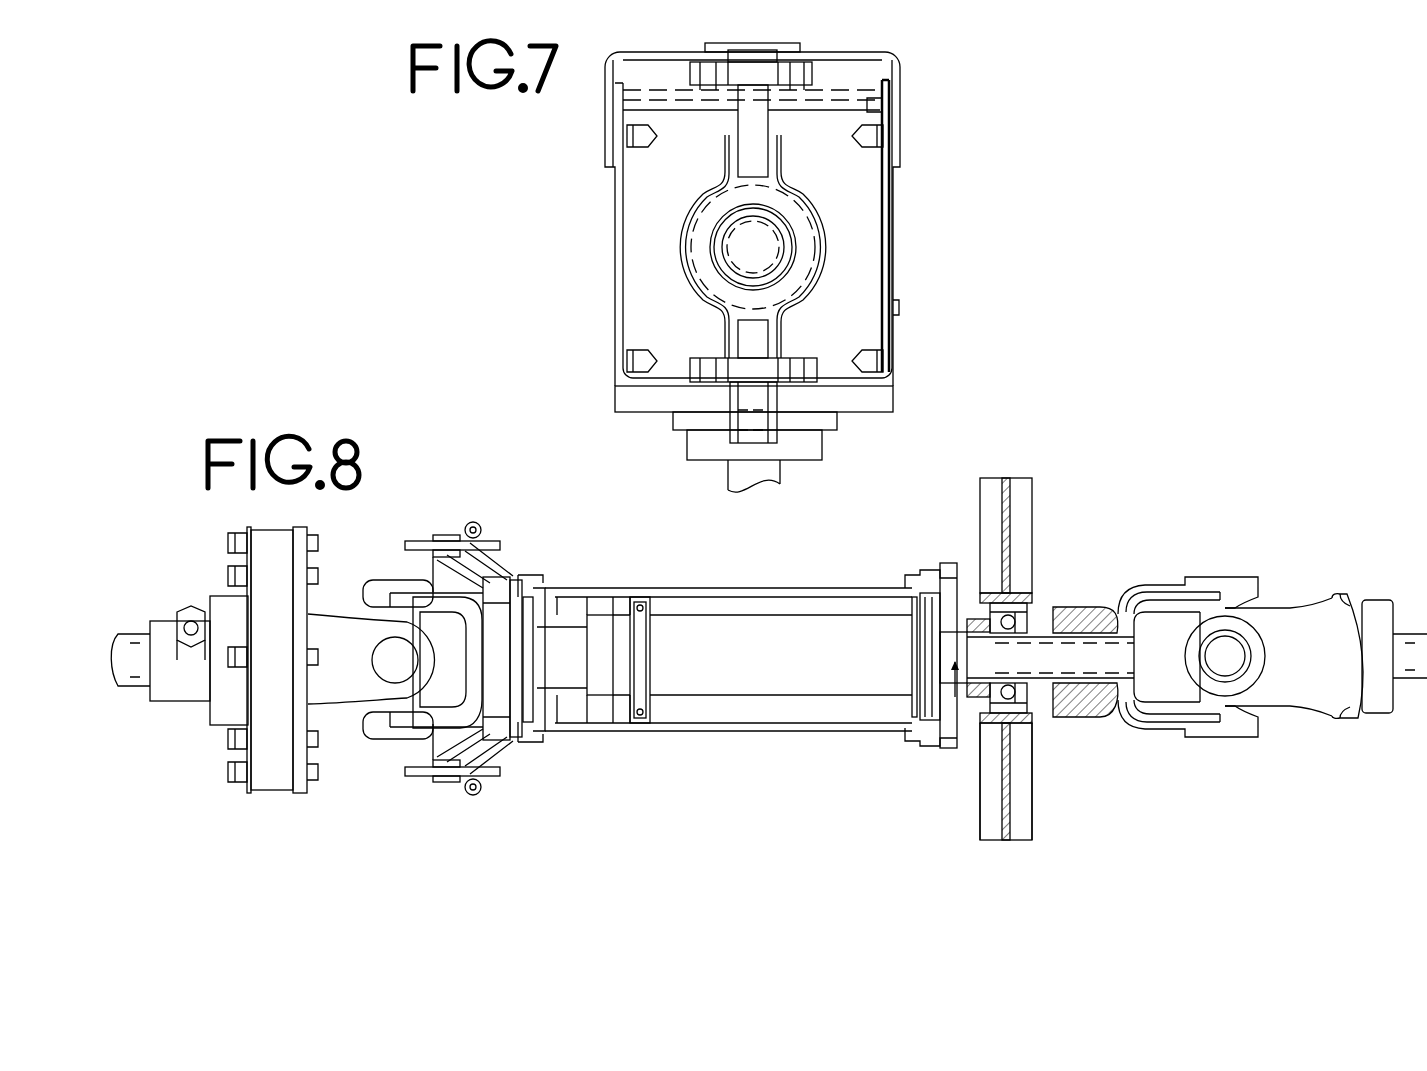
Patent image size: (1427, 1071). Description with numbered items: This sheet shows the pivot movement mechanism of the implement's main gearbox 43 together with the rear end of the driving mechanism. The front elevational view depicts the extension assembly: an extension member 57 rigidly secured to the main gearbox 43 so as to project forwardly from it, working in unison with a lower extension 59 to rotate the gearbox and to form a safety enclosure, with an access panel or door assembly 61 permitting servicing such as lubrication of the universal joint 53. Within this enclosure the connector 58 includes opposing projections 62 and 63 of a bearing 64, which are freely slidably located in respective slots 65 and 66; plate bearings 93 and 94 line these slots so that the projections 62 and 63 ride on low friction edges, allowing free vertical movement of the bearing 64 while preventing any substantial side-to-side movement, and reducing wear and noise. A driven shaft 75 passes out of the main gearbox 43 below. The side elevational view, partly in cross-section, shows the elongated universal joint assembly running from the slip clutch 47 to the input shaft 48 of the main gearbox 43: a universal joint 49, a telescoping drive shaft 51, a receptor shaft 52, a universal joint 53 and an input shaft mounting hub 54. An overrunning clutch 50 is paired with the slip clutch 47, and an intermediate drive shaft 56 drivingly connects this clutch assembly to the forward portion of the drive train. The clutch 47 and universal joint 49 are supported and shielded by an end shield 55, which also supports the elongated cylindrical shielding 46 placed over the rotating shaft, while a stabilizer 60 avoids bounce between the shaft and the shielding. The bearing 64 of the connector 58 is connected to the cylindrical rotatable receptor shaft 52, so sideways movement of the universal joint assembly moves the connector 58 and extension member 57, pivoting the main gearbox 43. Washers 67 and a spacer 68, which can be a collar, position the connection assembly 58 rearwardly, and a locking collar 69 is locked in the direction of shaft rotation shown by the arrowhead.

In FIG. 7, the main gearbox 43 is at (885, 390).
In FIG. 7, the extension member 57 is at (892, 52).
In FIG. 7, the lower extension 59 is at (612, 300).
In FIG. 7, the access panel or door assembly 61 is at (896, 212).
In FIG. 7, the projection 62 is at (736, 116).
In FIG. 8, the projection 62 is at (1018, 508).
In FIG. 7, the projection 63 is at (730, 403).
In FIG. 8, the projection 63 is at (1022, 805).
In FIG. 7, the bearing 64 is at (793, 212).
In FIG. 8, the bearing 64 is at (1030, 716).
In FIG. 7, the slot 65 is at (798, 47).
In FIG. 7, the slot 66 is at (788, 385).
In FIG. 7, the driven shaft 75 is at (737, 472).
In FIG. 7, the plate bearing 93 is at (690, 70).
In FIG. 7, the plate bearing 94 is at (692, 368).
In FIG. 8, the cylindrical shielding 46 is at (678, 732).
In FIG. 8, the slip clutch 47 is at (272, 792).
In FIG. 8, the input shaft 48 is at (1412, 634).
In FIG. 8, the universal joint 49 is at (393, 578).
In FIG. 8, the overrunning clutch 50 is at (178, 704).
In FIG. 8, the telescoping drive shaft 51 is at (600, 697).
In FIG. 8, the receptor shaft 52 is at (1005, 659).
In FIG. 8, the universal joint 53 is at (1245, 610).
In FIG. 8, the input shaft mounting hub 54 is at (1375, 718).
In FIG. 8, the end shield 55 is at (497, 550).
In FIG. 8, the intermediate drive shaft 56 is at (130, 636).
In FIG. 8, the connector 58 is at (978, 797).
In FIG. 8, the stabilizer 60 is at (648, 592).
In FIG. 8, the washers 67 is at (1052, 633).
In FIG. 8, the spacer 68 is at (1038, 622).
In FIG. 8, the locking collar 69 is at (955, 697).